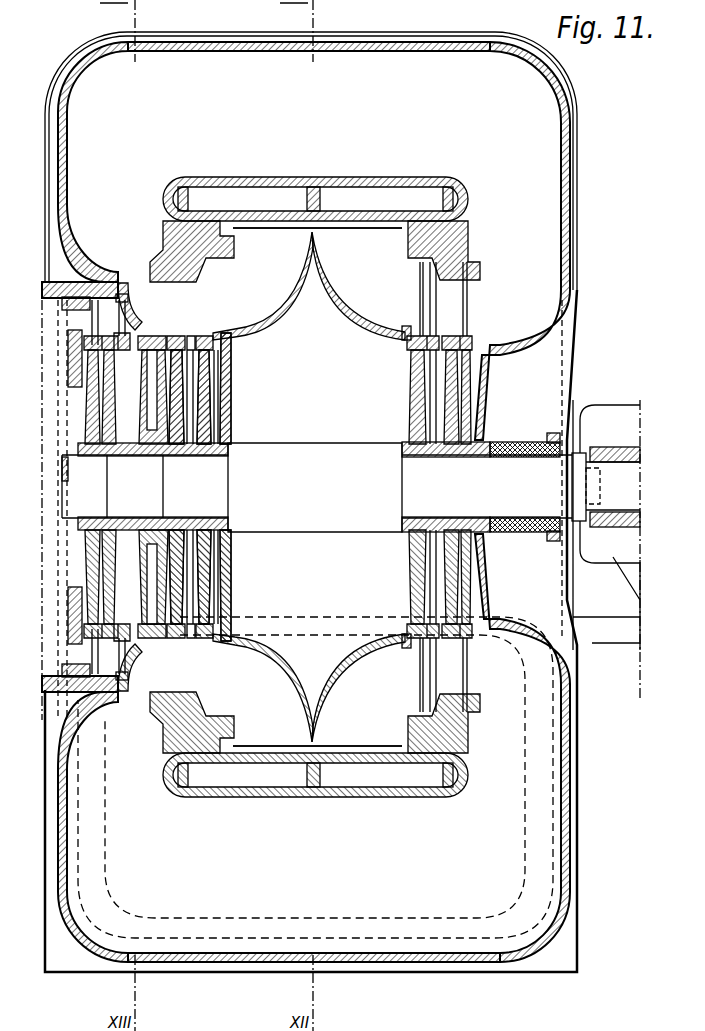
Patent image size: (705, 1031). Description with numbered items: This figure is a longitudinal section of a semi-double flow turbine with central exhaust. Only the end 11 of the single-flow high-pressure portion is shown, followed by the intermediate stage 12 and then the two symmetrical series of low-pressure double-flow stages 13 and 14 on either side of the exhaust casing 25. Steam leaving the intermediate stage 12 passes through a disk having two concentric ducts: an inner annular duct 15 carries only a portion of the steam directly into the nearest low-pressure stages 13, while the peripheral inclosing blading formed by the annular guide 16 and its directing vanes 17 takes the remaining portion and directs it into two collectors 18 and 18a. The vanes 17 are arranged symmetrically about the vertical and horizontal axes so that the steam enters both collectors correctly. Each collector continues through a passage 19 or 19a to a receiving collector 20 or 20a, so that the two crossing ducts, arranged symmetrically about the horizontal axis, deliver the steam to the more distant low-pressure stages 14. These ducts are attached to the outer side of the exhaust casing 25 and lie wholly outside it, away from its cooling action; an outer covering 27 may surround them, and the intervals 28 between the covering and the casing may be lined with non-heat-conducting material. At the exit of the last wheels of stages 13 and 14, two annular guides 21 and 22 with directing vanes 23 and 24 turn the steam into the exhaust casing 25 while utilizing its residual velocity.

The end of the single-flow high-pressure portion 11 is at (80, 372).
The intermediate stage 12 is at (110, 320).
The double-flow stages 13 is at (202, 284).
The double-flow stages 14 is at (432, 300).
The inner annular duct 15 is at (141, 338).
The annular guide 16 is at (132, 310).
The directing vanes 17 is at (141, 286).
The collector 18 is at (63, 180).
The collector 18a is at (64, 820).
The passage 19 is at (255, 48).
The passage 19a is at (258, 953).
The receiving collector 20 is at (561, 194).
The receiving collector 20a is at (535, 570).
The annular guide 21 is at (253, 331).
The annular guide 22 is at (212, 36).
The directing vanes 23 is at (286, 290).
The directing vanes 24 is at (388, 321).
The exhaust casing 25 is at (345, 205).
The outer covering 27 is at (586, 816).
The intervals 28 is at (231, 180).